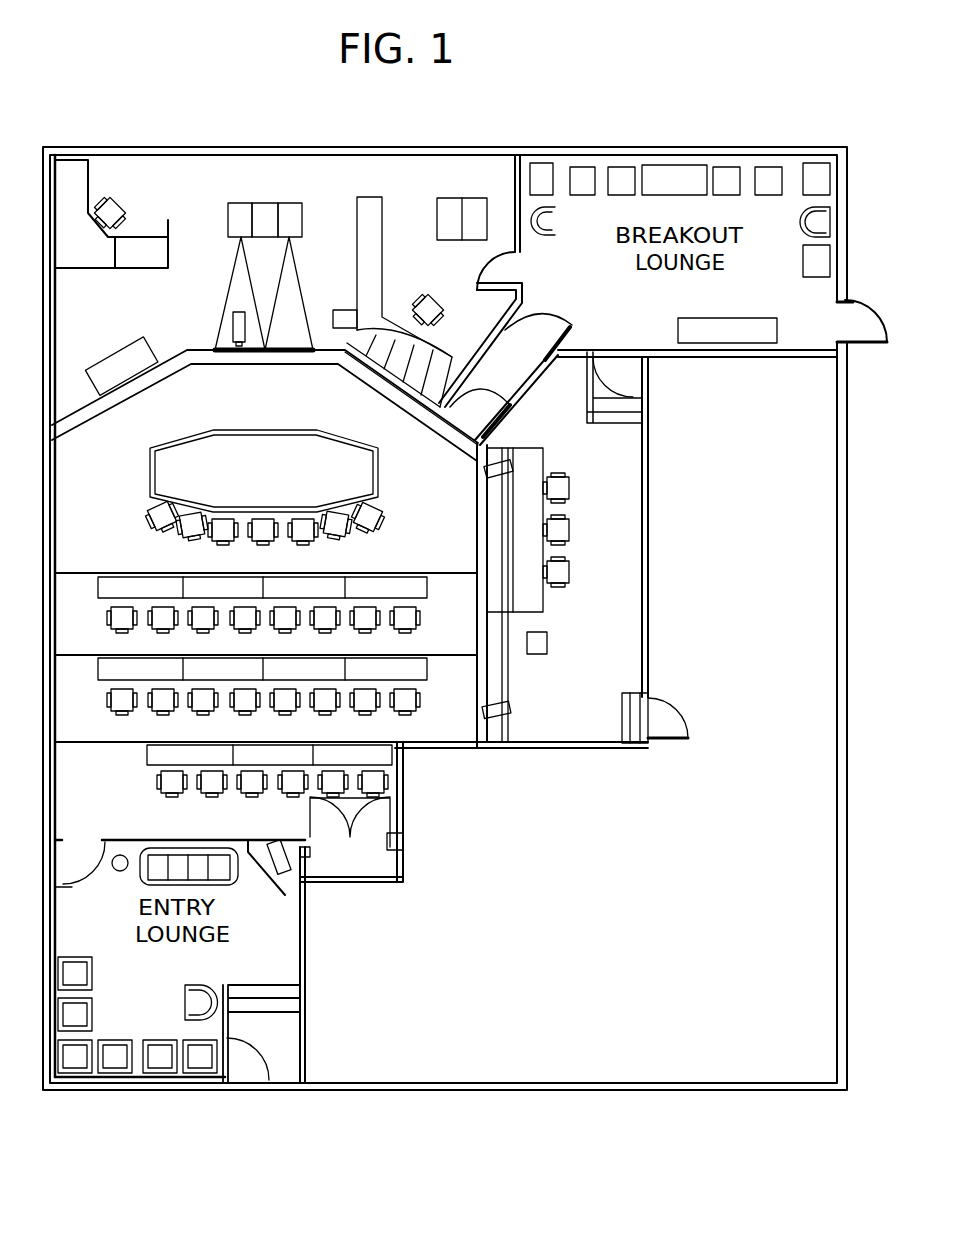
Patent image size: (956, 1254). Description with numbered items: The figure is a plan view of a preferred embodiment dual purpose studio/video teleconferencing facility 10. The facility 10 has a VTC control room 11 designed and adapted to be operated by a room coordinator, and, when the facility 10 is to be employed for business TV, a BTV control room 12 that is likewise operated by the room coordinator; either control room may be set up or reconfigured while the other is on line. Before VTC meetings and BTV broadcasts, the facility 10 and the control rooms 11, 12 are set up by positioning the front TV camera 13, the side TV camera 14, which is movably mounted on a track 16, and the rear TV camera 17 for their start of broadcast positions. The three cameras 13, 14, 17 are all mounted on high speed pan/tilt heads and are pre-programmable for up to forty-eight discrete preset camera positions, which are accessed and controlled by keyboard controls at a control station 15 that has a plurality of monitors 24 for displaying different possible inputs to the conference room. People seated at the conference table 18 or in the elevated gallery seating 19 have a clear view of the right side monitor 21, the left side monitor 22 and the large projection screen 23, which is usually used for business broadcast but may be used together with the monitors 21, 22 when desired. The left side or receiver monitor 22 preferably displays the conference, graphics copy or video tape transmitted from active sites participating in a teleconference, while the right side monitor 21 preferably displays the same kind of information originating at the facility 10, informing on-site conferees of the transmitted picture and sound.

The dual purpose studio/video teleconferencing facility 10 is at (292, 420).
The VTC control room 11 is at (208, 235).
The BTV control room 12 is at (621, 630).
The front TV camera 13 is at (233, 322).
The side TV camera 14 is at (487, 471).
The control station 15 is at (388, 310).
The track 16 is at (500, 535).
The rear TV camera 17 is at (289, 862).
The conference table 18 is at (170, 478).
The elevated gallery seating 19 is at (89, 625).
The right side monitor 21 is at (312, 375).
The left side monitor 22 is at (243, 356).
The large projection screen 23 is at (118, 360).
The monitors 24 is at (420, 373).